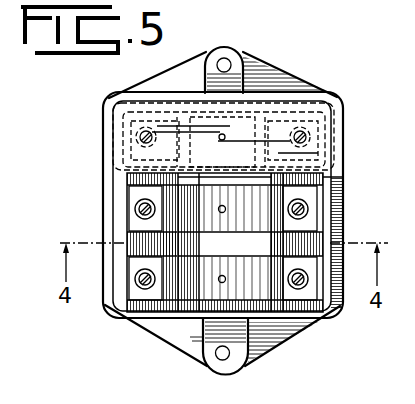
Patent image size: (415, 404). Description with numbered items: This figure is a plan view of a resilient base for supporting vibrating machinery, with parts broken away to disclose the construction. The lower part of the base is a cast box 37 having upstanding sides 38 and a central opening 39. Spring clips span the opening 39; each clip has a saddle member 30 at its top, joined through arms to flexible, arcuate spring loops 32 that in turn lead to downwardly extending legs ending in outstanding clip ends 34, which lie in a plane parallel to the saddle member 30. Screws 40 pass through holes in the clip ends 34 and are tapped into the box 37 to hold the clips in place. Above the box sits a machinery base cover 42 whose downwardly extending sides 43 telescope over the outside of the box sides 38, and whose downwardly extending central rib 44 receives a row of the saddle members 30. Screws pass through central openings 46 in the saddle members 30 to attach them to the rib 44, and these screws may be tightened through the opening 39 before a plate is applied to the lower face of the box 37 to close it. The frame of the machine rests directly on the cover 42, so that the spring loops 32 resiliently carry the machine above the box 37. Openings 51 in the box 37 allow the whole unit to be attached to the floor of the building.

The saddle member 30 is at (230, 245).
The spring loop 32 is at (185, 303).
The clip end 34 is at (137, 294).
The cast box 37 is at (341, 207).
The upstanding sides 38 is at (333, 189).
The central opening 39 is at (346, 234).
The screws 40 is at (311, 287).
The machinery base cover 42 is at (328, 171).
The downwardly extending sides 43 is at (341, 143).
The central rib 44 is at (124, 160).
The central openings 46 is at (220, 284).
The openings 51 is at (229, 354).